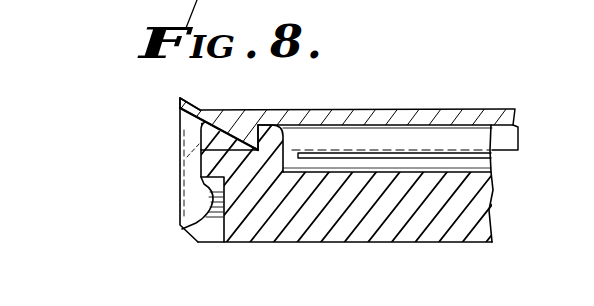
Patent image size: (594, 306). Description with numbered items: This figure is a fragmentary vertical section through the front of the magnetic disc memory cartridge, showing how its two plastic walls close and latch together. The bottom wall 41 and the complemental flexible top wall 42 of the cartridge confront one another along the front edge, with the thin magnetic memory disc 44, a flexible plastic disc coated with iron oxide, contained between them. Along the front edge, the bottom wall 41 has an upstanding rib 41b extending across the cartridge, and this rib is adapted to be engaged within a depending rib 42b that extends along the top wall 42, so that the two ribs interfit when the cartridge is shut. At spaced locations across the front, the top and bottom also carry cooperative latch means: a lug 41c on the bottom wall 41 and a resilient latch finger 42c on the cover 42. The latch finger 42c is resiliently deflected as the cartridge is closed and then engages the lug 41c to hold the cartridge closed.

The bottom wall 41 is at (358, 217).
The upstanding rib 41b is at (280, 130).
The lug 41c is at (204, 162).
The flexible top wall 42 is at (450, 116).
The depending rib 42b is at (248, 138).
The resilient latch finger 42c is at (190, 137).
The magnetic memory disc 44 is at (489, 158).